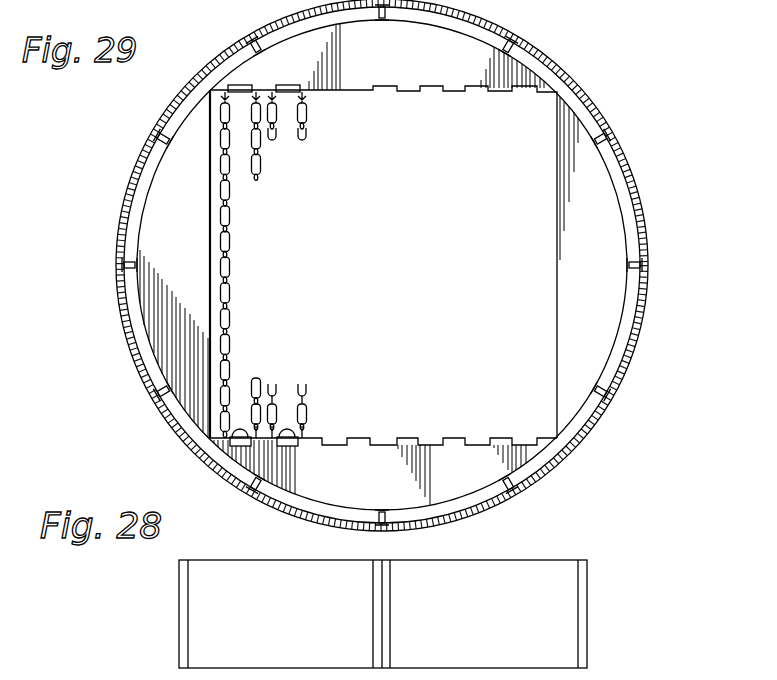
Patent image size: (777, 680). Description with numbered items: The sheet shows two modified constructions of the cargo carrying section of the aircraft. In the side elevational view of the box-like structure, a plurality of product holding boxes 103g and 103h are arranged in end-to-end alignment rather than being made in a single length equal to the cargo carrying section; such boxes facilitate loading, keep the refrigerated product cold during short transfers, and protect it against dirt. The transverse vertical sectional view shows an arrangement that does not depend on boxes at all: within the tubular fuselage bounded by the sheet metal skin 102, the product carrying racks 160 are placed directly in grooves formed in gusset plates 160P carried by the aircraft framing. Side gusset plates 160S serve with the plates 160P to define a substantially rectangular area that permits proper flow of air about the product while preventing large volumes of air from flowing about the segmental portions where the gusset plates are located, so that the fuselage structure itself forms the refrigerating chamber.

In FIG. 29, the sheet metal skin 102 is at (577, 82).
In FIG. 29, the gusset plates 160P is at (463, 52).
In FIG. 29, the side gusset plates 160S is at (166, 211).
In FIG. 29, the product carrying racks 160 is at (294, 81).
In FIG. 28, the box 103g is at (210, 613).
In FIG. 28, the box 103h is at (565, 597).